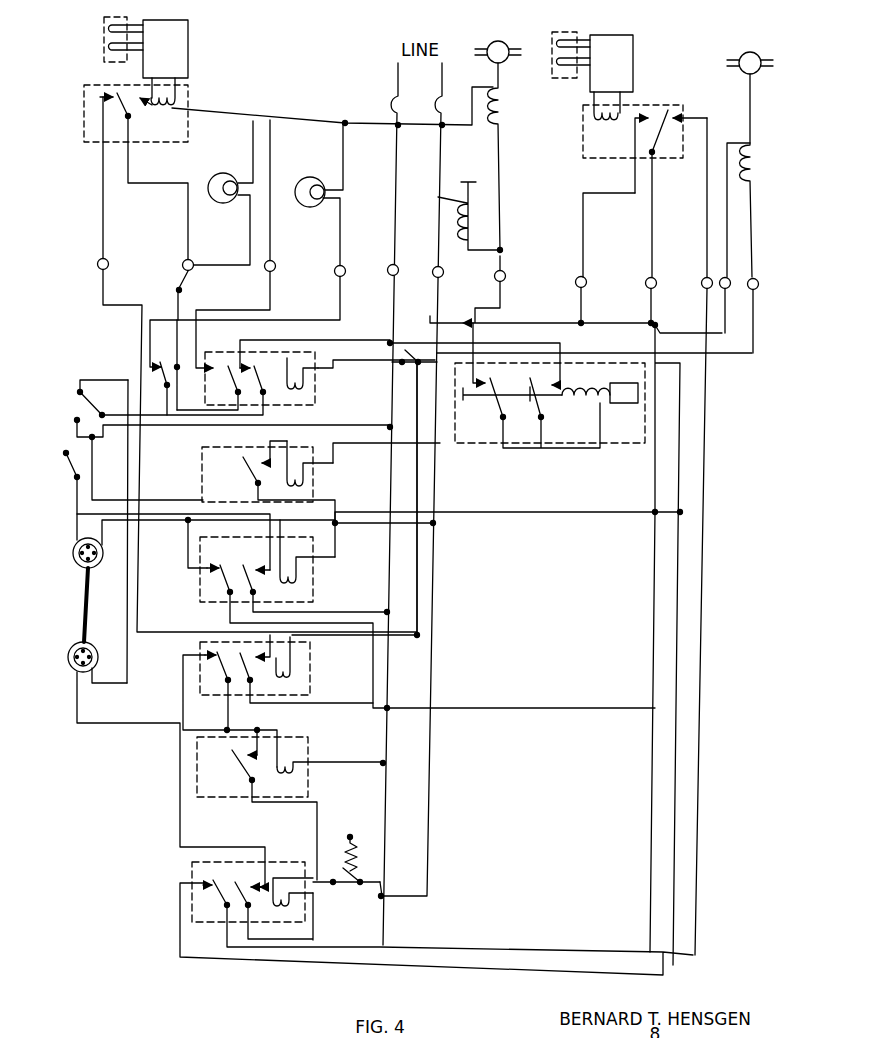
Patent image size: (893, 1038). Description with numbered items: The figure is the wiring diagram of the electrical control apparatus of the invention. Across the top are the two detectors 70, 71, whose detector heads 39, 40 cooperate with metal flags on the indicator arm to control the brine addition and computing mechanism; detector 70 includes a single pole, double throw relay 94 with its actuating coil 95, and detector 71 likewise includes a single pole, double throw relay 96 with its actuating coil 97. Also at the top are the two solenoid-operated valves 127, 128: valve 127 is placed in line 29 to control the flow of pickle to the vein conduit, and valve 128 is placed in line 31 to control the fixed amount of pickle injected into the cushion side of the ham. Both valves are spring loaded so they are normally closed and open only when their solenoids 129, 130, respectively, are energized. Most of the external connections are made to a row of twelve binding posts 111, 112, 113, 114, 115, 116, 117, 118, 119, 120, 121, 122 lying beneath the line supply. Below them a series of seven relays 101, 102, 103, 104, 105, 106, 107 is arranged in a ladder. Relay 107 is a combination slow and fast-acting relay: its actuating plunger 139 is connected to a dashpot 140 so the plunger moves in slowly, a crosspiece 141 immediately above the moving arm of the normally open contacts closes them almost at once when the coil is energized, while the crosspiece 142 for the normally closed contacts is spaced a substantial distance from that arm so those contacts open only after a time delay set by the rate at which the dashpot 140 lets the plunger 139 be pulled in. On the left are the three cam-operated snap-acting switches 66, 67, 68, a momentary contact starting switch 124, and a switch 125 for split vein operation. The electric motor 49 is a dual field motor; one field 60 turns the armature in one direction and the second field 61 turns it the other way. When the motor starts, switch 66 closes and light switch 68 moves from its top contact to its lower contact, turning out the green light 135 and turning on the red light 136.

The line 29 is at (770, 77).
The line 31 is at (480, 47).
The detector head 39 is at (105, 27).
The detector head 40 is at (553, 84).
The electric motor 49 is at (84, 592).
The field 60 is at (68, 664).
The field 61 is at (74, 548).
The snap-acting switch 66 is at (68, 470).
The snap-acting switch 67 is at (78, 399).
The snap-acting switch 68 is at (151, 374).
The detector 70 is at (193, 41).
The detector 71 is at (638, 43).
The single pole, double throw relay 94 is at (196, 104).
The actuating coil 95 is at (184, 90).
The single pole, double throw relay 96 is at (644, 102).
The actuating coil 97 is at (590, 119).
The relay 101 is at (192, 876).
The relay 102 is at (197, 763).
The relay 103 is at (200, 685).
The relay 104 is at (200, 592).
The relay 105 is at (199, 462).
The relay 106 is at (316, 394).
The relay 107 is at (473, 438).
The binding post 111 is at (106, 262).
The binding post 112 is at (182, 268).
The binding post 113 is at (273, 263).
The binding post 114 is at (334, 276).
The binding post 115 is at (390, 266).
The binding post 116 is at (436, 266).
The binding post 117 is at (504, 271).
The binding post 118 is at (575, 289).
The binding post 119 is at (646, 276).
The binding post 120 is at (701, 283).
The binding post 121 is at (721, 277).
The binding post 122 is at (760, 284).
The momentary contact starting switch 124 is at (334, 867).
The switch 125 is at (408, 350).
The solenoid-operated valve 127 is at (740, 72).
The solenoid-operated valve 128 is at (501, 45).
The solenoid 129 is at (757, 155).
The solenoid 130 is at (486, 123).
The green light 135 is at (308, 177).
The red light 136 is at (220, 173).
The actuating plunger 139 is at (512, 398).
The dashpot 140 is at (636, 406).
The crosspiece 141 is at (541, 404).
The crosspiece 142 is at (465, 398).